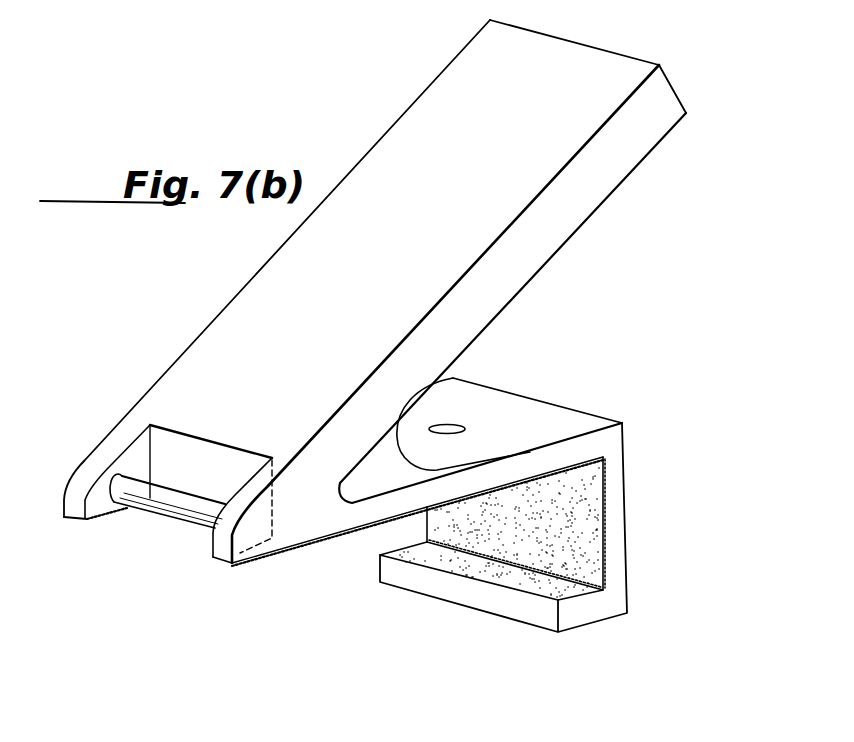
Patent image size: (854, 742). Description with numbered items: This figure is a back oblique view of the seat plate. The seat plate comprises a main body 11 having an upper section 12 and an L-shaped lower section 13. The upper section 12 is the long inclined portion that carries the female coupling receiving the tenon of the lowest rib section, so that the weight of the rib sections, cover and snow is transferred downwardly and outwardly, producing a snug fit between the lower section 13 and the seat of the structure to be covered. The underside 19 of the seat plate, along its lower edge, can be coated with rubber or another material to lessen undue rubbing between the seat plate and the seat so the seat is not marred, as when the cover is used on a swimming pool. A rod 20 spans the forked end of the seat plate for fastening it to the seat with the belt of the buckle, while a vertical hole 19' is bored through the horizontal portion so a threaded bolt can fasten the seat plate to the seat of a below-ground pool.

The main body 11 is at (197, 340).
The upper section 12 is at (440, 122).
The L-shaped lower section 13 is at (617, 538).
The underside 19 is at (417, 548).
The vertical hole 19' is at (507, 390).
The rod 20 is at (180, 503).